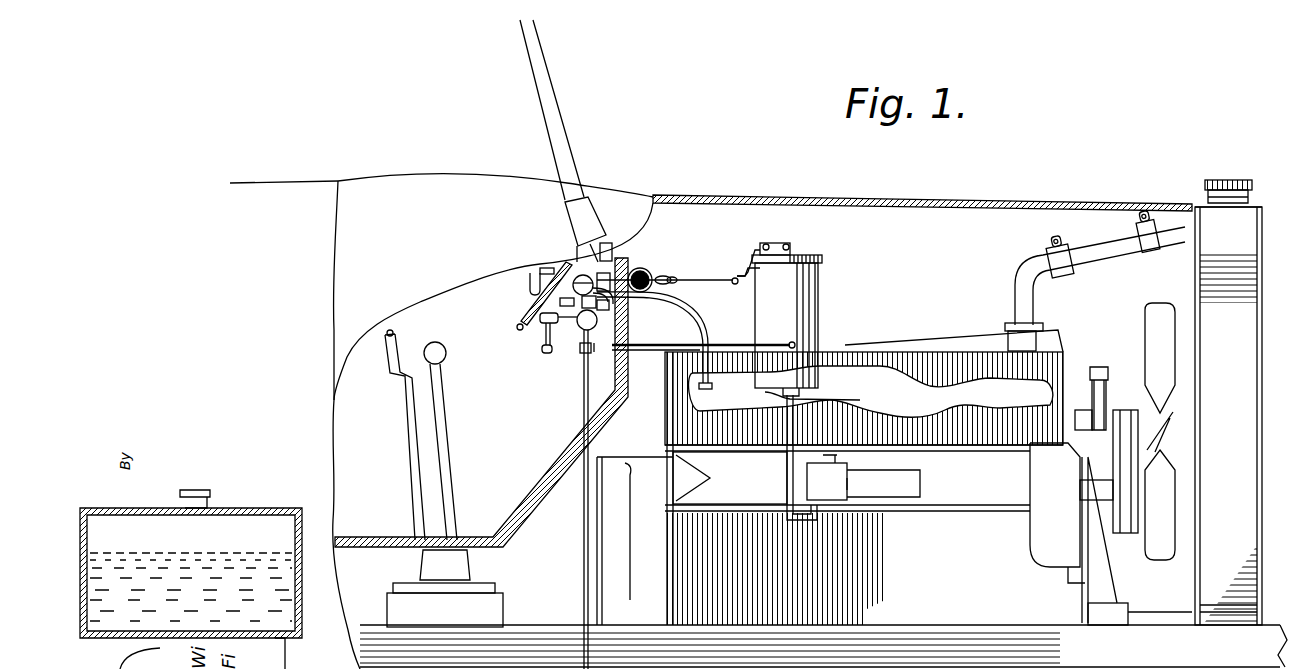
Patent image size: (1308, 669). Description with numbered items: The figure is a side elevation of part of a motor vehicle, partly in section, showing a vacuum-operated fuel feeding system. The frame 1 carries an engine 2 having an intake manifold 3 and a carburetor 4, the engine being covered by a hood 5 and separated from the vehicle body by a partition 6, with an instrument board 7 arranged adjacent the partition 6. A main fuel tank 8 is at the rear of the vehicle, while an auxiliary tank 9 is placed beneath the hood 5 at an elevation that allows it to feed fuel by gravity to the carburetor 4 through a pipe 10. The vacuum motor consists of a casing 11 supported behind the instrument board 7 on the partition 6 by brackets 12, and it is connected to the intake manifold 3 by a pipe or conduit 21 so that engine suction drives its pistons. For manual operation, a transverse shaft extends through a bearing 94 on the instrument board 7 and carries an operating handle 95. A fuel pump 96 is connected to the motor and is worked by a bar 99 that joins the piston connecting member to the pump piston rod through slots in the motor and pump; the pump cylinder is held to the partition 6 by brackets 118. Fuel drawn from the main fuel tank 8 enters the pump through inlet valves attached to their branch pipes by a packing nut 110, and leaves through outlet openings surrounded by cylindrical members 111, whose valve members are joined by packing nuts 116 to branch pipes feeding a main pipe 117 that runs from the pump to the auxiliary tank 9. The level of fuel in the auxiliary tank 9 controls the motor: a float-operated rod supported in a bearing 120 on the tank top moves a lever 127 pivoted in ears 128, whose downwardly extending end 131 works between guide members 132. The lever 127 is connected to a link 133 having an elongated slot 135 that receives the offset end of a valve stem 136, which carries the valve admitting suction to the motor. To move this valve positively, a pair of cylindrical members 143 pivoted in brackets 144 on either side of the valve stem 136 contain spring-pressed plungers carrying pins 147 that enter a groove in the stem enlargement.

The frame 1 is at (823, 646).
The engine 2 is at (864, 477).
The intake manifold 3 is at (871, 391).
The carburetor 4 is at (863, 477).
The hood 5 is at (830, 197).
The partition 6 is at (624, 331).
The instrument board 7 is at (528, 308).
The main fuel tank 8 is at (233, 508).
The auxiliary tank 9 is at (808, 308).
The pipe 10 is at (788, 455).
The casing 11 is at (576, 247).
The brackets 12 is at (606, 246).
The pipe or conduit 21 is at (712, 349).
The bearing 94 is at (543, 266).
The operating handle 95 is at (528, 274).
The fuel pump 96 is at (576, 322).
The bar 99 is at (574, 302).
The packing nut 110 is at (594, 352).
The cylindrical members 111 is at (578, 352).
The packing nuts 116 is at (550, 320).
The main pipe 117 is at (683, 338).
The brackets 118 is at (641, 302).
The bearing 120 is at (790, 250).
The lever 127 is at (748, 253).
The ears 128 is at (768, 245).
The downwardly extending end of lever 131 is at (744, 254).
The guide members 132 is at (748, 277).
The link 133 is at (731, 286).
The elongated slot 135 is at (684, 278).
The valve stem 136 is at (706, 311).
The cylindrical members 143 is at (660, 277).
The brackets 144 is at (652, 268).
The pins 147 is at (640, 271).